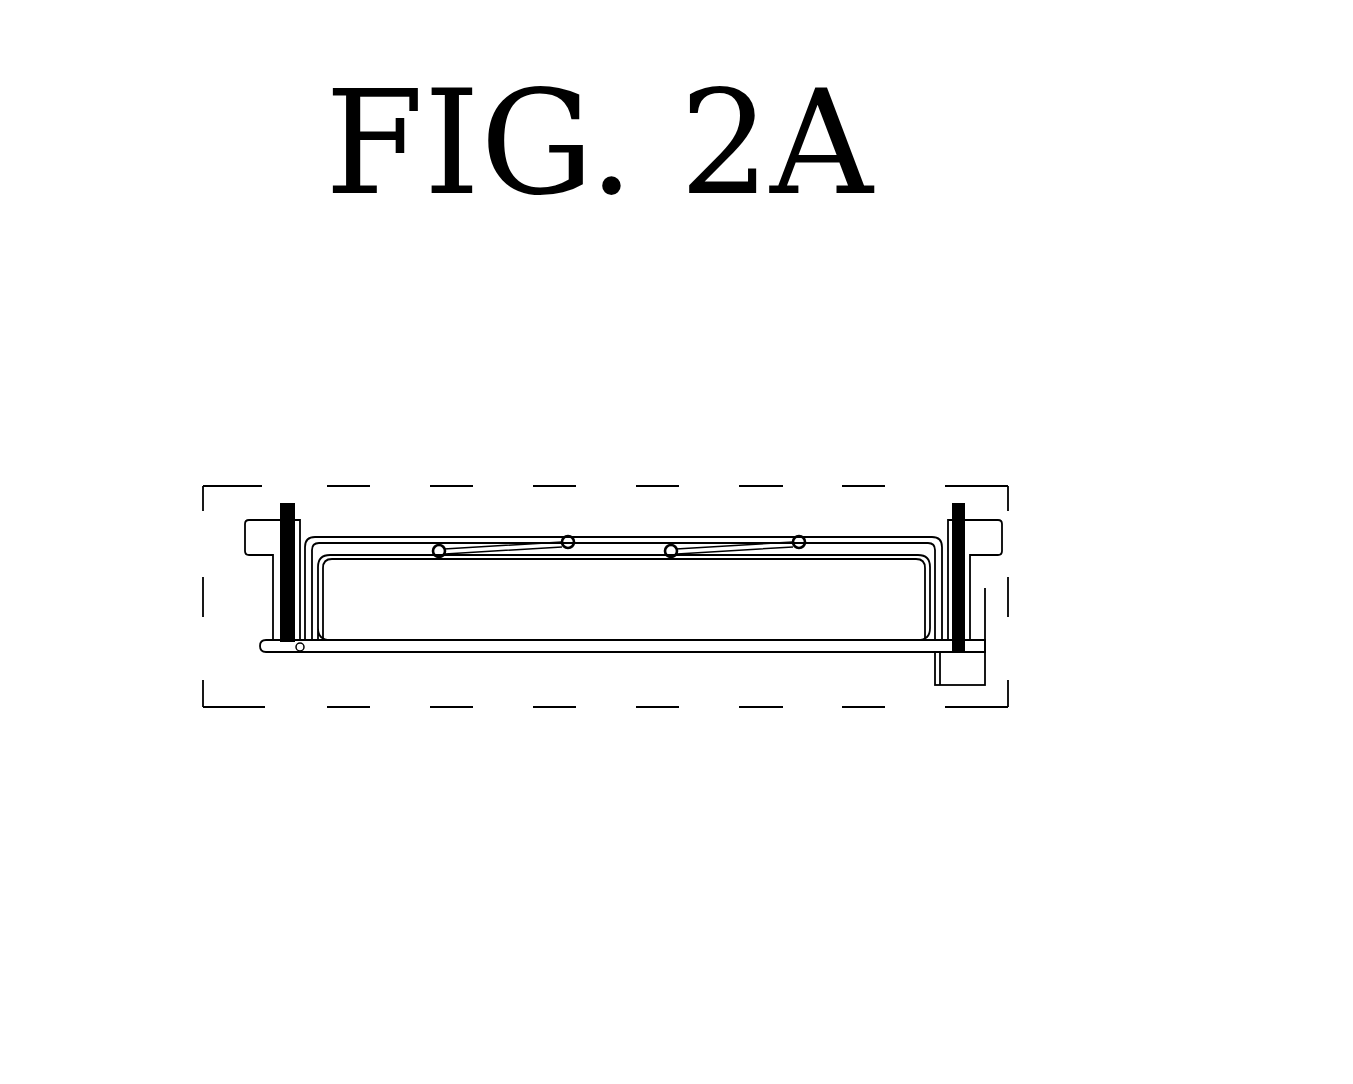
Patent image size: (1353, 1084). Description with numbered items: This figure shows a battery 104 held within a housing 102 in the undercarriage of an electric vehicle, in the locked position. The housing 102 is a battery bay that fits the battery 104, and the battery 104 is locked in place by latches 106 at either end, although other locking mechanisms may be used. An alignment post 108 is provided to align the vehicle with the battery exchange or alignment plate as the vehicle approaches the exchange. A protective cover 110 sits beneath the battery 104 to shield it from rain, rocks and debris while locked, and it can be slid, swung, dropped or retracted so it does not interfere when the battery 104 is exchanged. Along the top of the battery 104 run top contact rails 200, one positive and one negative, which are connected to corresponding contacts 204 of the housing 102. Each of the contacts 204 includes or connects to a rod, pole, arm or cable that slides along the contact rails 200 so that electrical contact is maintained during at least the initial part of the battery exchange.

The housing 102 is at (263, 707).
The battery 104 is at (648, 629).
The latches 106 is at (1035, 383).
The alignment post 108 is at (995, 687).
The protective cover 110 is at (350, 643).
The top contact rails 200 is at (880, 556).
The contacts 204 is at (442, 547).